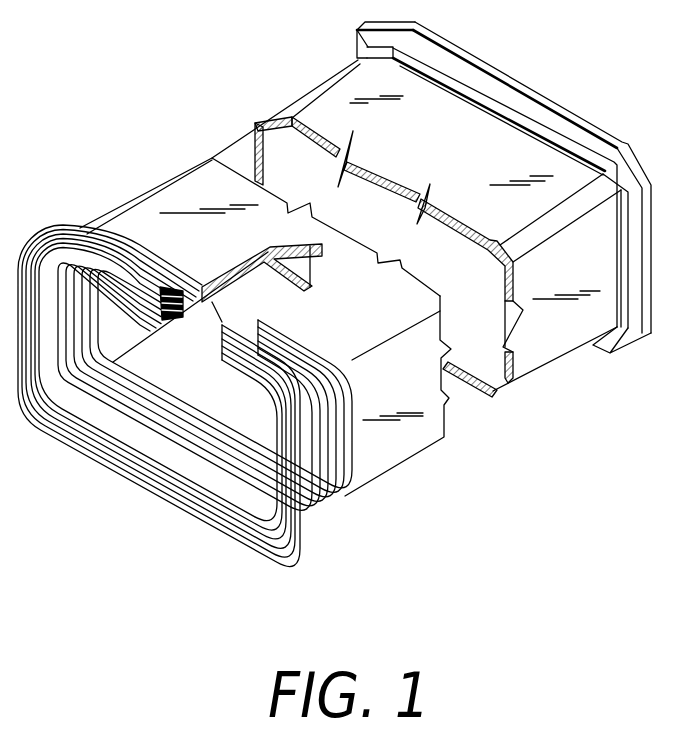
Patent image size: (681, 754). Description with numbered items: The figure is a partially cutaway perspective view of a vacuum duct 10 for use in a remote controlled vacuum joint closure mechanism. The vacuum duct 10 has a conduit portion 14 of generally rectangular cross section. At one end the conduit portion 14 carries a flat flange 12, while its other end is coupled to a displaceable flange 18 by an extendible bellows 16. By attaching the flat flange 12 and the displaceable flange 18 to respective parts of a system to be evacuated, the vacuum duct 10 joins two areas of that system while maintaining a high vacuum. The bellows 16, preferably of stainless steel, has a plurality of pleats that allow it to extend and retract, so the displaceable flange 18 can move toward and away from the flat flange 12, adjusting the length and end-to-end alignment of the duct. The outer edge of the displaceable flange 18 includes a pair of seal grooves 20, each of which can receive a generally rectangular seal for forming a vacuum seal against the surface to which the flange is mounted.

The vacuum duct 10 is at (490, 423).
The flat flange 12 is at (495, 68).
The conduit portion 14 is at (450, 146).
The extendible bellows 16 is at (330, 507).
The displaceable flange 18 is at (53, 227).
The seal grooves 20 is at (180, 303).